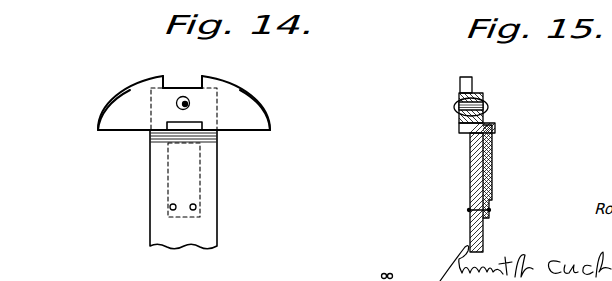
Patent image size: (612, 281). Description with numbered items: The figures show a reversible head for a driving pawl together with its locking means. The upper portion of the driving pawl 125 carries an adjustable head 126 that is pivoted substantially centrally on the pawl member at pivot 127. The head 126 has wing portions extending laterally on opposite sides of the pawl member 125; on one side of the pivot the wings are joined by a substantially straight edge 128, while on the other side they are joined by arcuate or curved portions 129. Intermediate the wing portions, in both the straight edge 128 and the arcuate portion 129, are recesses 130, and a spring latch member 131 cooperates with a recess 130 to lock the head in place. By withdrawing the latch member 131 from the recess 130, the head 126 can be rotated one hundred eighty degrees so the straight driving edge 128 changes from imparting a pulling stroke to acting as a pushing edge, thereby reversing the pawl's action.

In FIG. 14, the upper portion of driving pawl 125 is at (203, 229).
In FIG. 15, the upper portion of driving pawl 125 is at (483, 236).
In FIG. 14, the adjustable head 126 is at (242, 103).
In FIG. 15, the adjustable head 126 is at (464, 114).
In FIG. 14, the pivot 127 is at (129, 132).
In FIG. 15, the pivot 127 is at (483, 110).
In FIG. 14, the straight edge 128 is at (237, 133).
In FIG. 14, the arcuate portions 129 is at (112, 101).
In FIG. 14, the recesses 130 is at (182, 82).
In FIG. 15, the recesses 130 is at (473, 88).
In FIG. 15, the spring latch member 131 is at (493, 162).